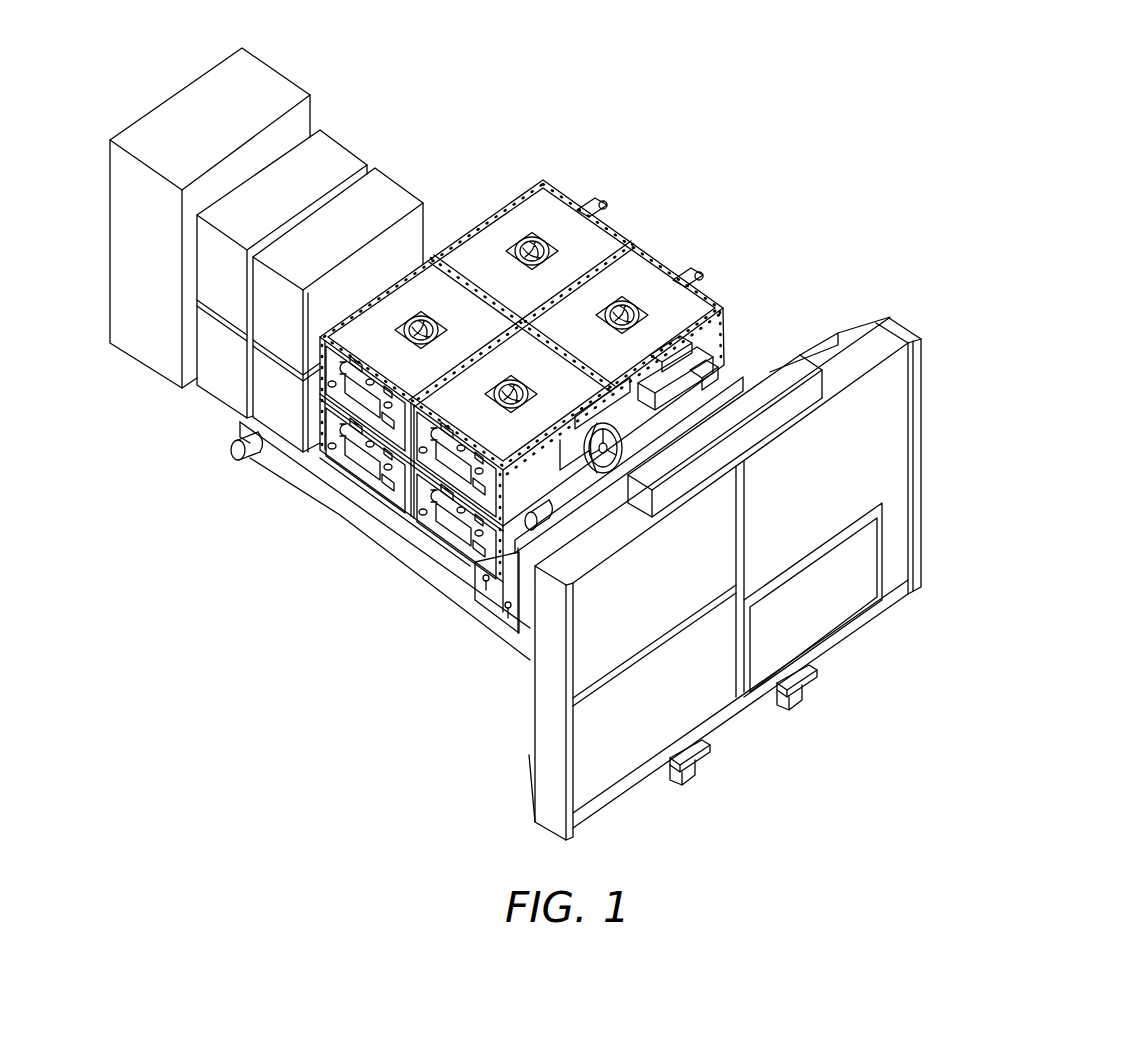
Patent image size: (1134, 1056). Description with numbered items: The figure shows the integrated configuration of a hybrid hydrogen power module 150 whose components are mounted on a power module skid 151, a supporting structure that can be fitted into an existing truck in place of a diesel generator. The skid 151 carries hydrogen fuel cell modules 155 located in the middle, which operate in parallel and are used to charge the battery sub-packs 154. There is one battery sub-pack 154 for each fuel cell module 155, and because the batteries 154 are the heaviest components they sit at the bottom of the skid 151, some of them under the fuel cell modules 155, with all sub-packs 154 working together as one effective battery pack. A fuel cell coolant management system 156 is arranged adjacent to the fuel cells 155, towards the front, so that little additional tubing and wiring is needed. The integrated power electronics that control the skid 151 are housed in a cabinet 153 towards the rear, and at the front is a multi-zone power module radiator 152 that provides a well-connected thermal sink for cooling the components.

The hybrid hydrogen power module 150 is at (585, 55).
The power module skid 151 is at (333, 527).
The power module radiator 152 is at (929, 397).
The cabinet 153 is at (140, 377).
The battery sub-pack 154 is at (388, 153).
The hydrogen fuel cell module 155 is at (653, 221).
The fuel cell coolant management system 156 is at (497, 618).